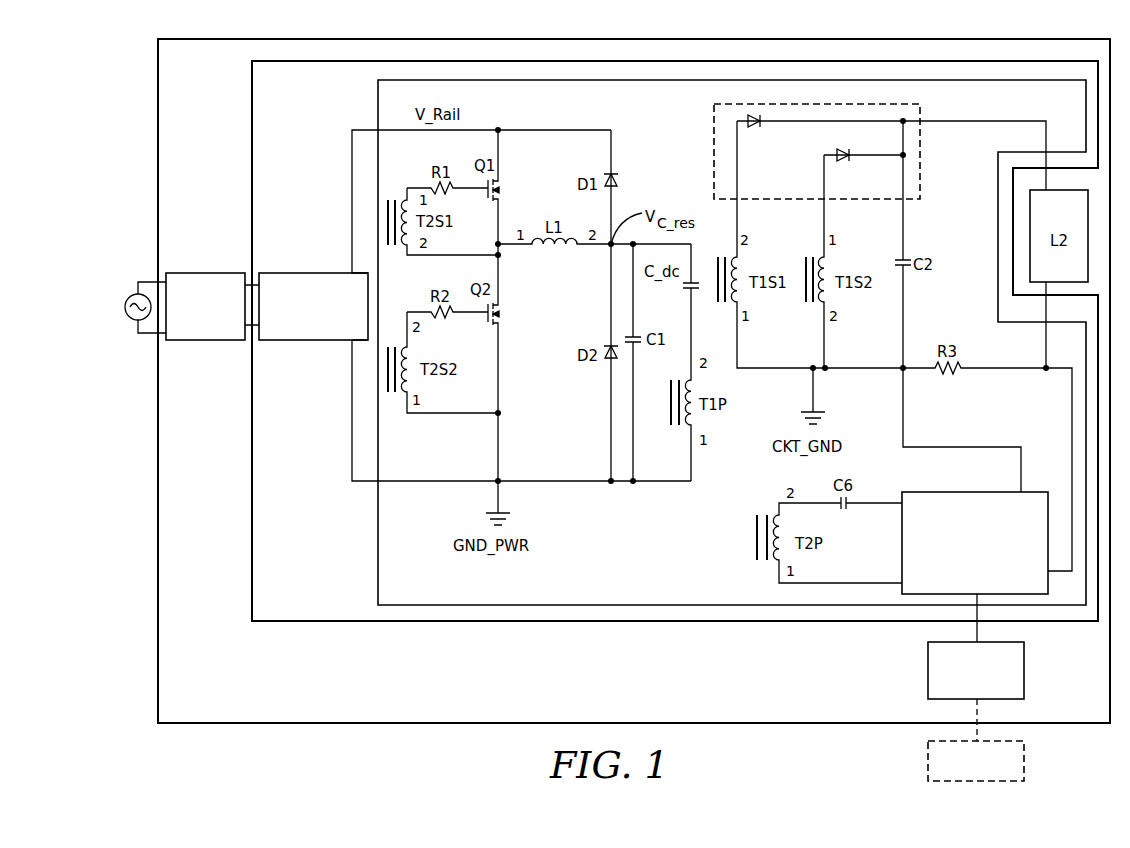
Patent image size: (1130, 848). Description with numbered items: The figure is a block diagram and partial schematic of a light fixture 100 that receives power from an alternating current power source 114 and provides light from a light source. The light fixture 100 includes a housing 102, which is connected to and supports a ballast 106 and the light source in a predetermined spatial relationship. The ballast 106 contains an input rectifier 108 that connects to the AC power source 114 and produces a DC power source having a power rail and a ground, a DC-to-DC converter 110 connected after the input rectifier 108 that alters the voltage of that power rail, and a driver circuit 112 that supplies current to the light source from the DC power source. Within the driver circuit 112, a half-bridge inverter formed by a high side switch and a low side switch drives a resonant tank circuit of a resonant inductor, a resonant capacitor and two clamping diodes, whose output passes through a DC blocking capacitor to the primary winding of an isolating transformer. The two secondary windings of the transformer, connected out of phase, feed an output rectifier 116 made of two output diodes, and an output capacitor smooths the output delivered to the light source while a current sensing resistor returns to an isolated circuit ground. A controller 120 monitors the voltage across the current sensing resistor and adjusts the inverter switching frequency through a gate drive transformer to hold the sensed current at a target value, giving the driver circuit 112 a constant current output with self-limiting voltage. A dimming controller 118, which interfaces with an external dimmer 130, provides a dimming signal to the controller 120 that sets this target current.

The light fixture 100 is at (156, 42).
The housing 102 is at (182, 39).
The ballast 106 is at (252, 72).
The input rectifier 108 is at (228, 273).
The DC-to-DC converter 110 is at (333, 273).
The driver circuit 112 is at (378, 87).
The alternating current (AC) power source 114 is at (128, 298).
The output rectifier 116 is at (714, 140).
The dimming controller 118 is at (928, 672).
The controller 120 is at (985, 492).
The dimmer 130 is at (928, 762).